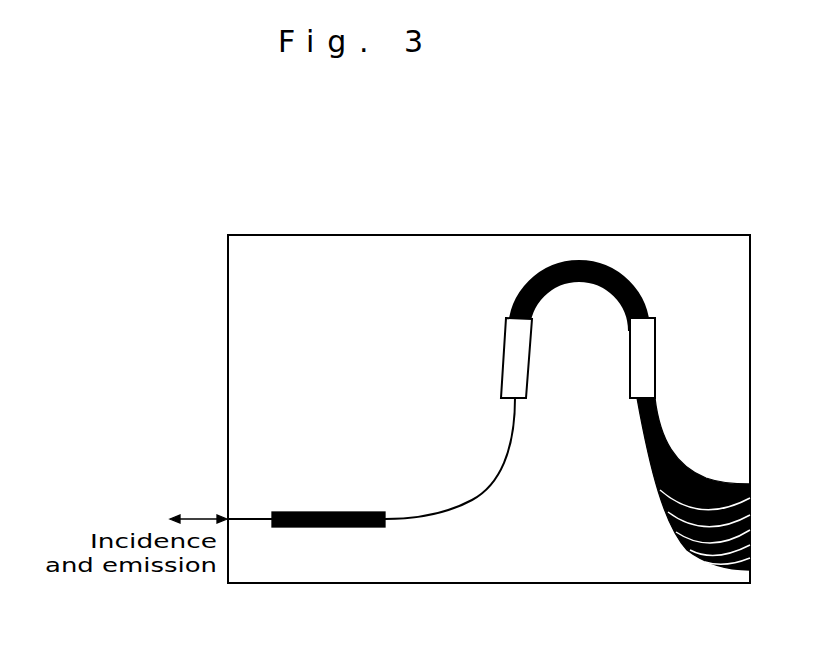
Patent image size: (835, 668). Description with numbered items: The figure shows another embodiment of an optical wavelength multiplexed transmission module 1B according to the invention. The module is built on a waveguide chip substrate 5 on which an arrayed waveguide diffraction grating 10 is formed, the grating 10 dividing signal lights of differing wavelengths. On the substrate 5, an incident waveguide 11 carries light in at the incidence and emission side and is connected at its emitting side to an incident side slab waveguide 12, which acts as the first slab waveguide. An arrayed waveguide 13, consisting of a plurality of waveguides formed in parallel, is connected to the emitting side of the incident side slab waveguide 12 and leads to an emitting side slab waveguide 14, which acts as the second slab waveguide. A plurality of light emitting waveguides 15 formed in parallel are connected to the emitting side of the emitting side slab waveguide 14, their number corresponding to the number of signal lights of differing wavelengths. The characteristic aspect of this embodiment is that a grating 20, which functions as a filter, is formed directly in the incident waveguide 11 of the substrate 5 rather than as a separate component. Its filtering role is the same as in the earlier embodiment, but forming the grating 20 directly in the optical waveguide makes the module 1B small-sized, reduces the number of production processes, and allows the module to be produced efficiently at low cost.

The optical wavelength multiplexed transmission module 1B is at (455, 170).
The substrate 5 is at (258, 293).
The arrayed waveguide diffraction grating 10 is at (312, 236).
The incident waveguide 11 is at (477, 496).
The incident side slab waveguide 12 is at (508, 368).
The arrayed waveguide 13 is at (566, 262).
The emitting side slab waveguide 14 is at (655, 368).
The emitting waveguides 15 is at (720, 472).
The grating 20 is at (319, 553).